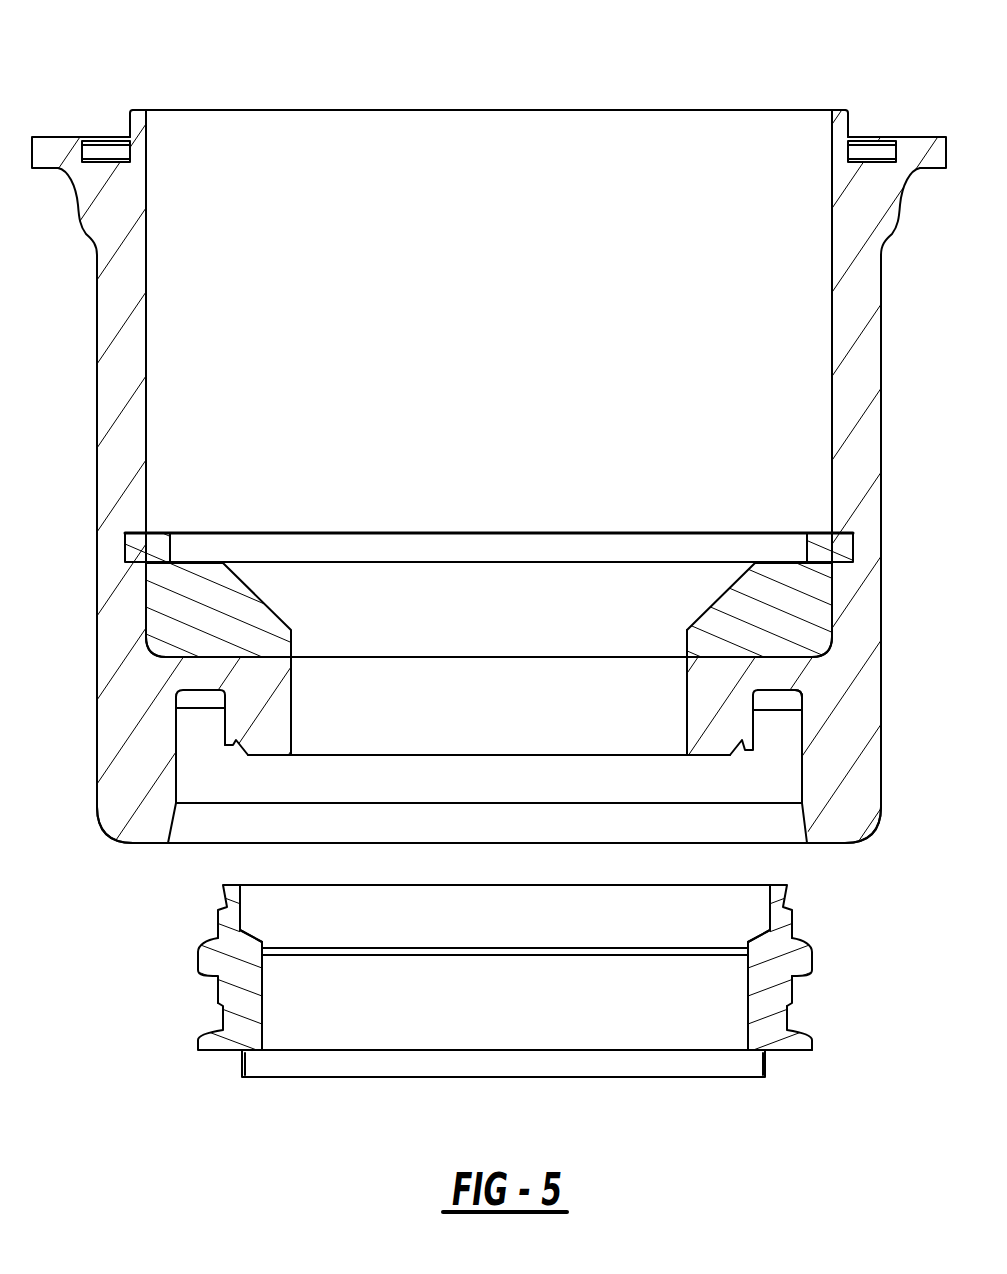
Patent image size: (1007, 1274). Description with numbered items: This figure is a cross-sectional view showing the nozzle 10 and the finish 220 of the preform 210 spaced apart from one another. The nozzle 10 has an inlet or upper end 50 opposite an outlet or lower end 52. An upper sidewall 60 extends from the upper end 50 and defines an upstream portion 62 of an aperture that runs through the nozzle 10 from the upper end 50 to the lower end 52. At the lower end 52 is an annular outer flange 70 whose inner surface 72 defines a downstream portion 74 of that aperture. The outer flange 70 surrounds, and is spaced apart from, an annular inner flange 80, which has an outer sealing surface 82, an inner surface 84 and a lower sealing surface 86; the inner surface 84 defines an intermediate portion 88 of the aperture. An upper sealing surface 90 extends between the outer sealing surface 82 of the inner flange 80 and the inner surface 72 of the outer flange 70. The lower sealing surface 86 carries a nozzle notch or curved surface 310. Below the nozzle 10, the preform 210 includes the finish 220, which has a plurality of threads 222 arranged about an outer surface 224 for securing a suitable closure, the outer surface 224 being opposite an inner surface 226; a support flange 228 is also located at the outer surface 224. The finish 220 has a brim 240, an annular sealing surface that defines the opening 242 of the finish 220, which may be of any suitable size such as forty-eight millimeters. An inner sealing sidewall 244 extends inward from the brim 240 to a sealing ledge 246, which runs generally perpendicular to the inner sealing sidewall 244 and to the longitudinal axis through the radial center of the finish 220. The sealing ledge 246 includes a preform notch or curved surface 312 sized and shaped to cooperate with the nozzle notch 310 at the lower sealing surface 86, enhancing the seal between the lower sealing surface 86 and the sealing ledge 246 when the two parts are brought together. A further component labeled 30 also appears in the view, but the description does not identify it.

The nozzle 10 is at (108, 458).
The insert body 30 is at (205, 605).
The inlet or upper end 50 is at (842, 106).
The outlet or lower end 52 is at (835, 848).
The upper sidewall 60 is at (146, 247).
The upstream portion 62 is at (530, 220).
The outer flange 70 is at (123, 793).
The inner surface 72 is at (177, 767).
The downstream portion 74 is at (545, 775).
The inner flange 80 is at (698, 728).
The outer sealing surface 82 is at (800, 702).
The inner surface 84 is at (683, 712).
The lower sealing surface 86 is at (707, 755).
The intermediate portion 88 is at (483, 696).
The upper sealing surface 90 is at (200, 695).
The nozzle notch or curved surface 310 is at (235, 743).
The preform notch or curved surface 312 is at (262, 946).
The preform 210 is at (690, 1077).
The finish 220 is at (770, 1023).
The threads 222 is at (815, 990).
The outer surface 224 is at (793, 1012).
The inner surface 226 is at (747, 1008).
The support flange 228 is at (817, 1040).
The brim 240 is at (235, 885).
The opening 242 is at (530, 883).
The inner sealing sidewall 244 is at (252, 925).
The sealing ledge 246 is at (248, 945).